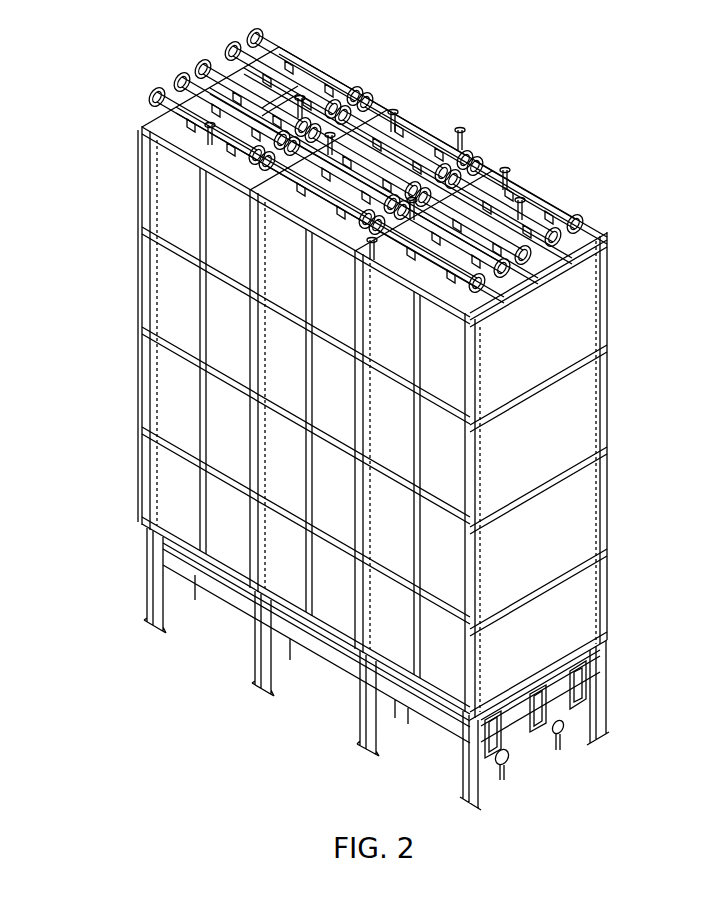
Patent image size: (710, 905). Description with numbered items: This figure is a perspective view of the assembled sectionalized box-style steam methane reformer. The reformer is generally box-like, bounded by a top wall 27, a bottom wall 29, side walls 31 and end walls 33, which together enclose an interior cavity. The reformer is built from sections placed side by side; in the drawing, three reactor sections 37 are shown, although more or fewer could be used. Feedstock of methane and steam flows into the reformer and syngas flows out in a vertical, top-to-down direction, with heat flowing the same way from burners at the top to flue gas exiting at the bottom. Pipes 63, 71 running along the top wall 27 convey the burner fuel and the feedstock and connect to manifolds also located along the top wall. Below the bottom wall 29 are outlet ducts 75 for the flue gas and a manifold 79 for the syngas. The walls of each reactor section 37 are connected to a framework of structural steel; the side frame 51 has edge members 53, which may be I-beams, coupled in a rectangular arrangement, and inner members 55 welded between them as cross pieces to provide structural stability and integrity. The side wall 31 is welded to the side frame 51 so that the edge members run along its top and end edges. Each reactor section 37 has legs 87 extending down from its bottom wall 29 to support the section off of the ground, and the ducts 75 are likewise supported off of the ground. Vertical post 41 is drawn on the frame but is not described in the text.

The top wall 27 is at (142, 128).
The bottom wall 29 is at (320, 632).
The side walls 31 is at (173, 490).
The end walls 33 is at (138, 368).
The reactor section 37 is at (356, 74).
The vertical post 41 is at (138, 168).
The side frame 51 is at (198, 437).
The edge members 53 is at (182, 158).
The inner members 55 is at (182, 253).
The pipes 63 is at (248, 33).
The pipes 71 is at (293, 95).
The outlet ducts 75 is at (586, 695).
The manifold 79 is at (560, 735).
The legs 87 is at (462, 765).